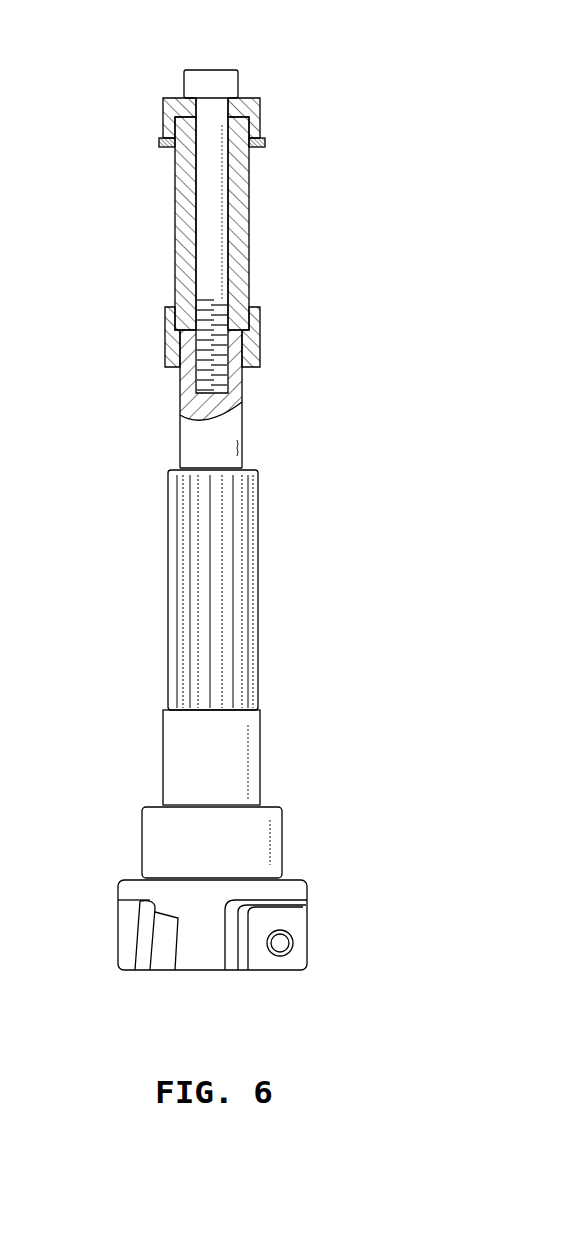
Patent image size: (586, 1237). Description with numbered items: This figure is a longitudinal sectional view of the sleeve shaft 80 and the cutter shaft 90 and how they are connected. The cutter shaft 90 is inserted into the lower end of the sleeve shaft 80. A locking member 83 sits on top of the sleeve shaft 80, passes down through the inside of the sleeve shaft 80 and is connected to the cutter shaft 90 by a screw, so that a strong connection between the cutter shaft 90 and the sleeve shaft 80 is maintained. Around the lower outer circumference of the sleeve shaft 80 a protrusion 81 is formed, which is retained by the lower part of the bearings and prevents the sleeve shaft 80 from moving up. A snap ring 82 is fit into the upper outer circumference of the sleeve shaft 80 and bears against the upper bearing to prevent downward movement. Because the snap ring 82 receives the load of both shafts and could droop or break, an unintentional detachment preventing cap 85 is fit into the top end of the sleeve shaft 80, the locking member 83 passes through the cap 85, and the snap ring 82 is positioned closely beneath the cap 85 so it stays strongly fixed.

The sleeve shaft 80 is at (240, 227).
The protrusion 81 is at (168, 333).
The snap ring 82 is at (162, 142).
The locking member 83 is at (212, 82).
The unintentional detachment preventing cap 85 is at (163, 100).
The cutter shaft 90 is at (230, 762).